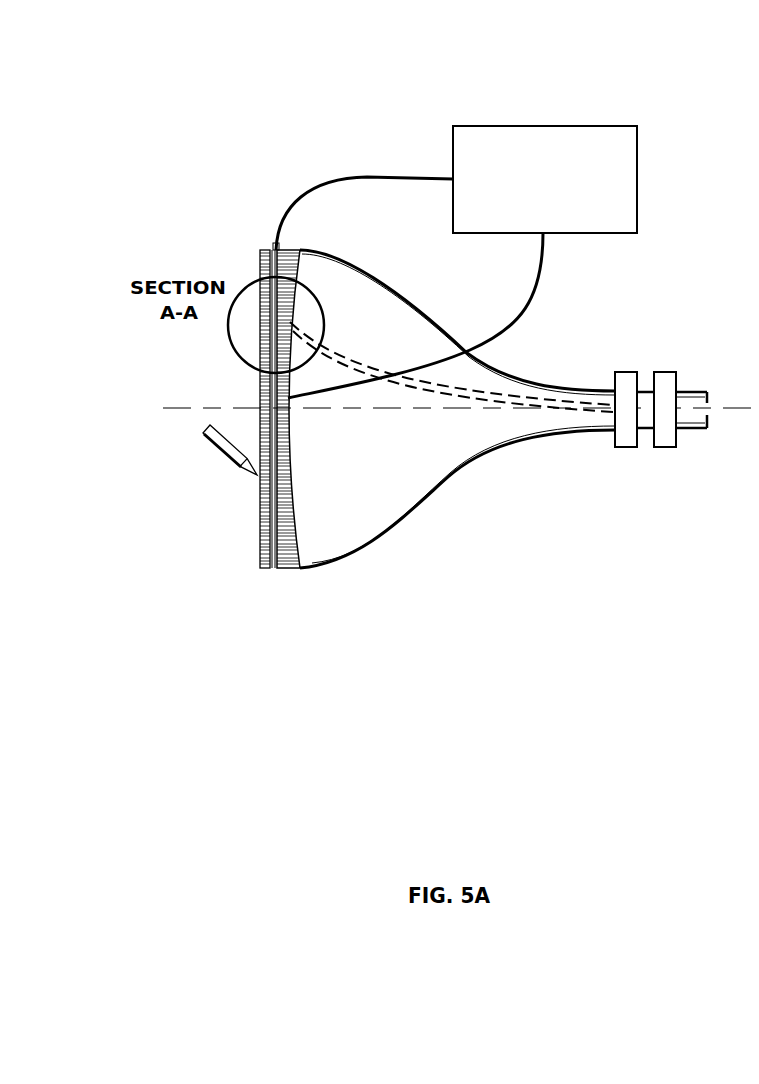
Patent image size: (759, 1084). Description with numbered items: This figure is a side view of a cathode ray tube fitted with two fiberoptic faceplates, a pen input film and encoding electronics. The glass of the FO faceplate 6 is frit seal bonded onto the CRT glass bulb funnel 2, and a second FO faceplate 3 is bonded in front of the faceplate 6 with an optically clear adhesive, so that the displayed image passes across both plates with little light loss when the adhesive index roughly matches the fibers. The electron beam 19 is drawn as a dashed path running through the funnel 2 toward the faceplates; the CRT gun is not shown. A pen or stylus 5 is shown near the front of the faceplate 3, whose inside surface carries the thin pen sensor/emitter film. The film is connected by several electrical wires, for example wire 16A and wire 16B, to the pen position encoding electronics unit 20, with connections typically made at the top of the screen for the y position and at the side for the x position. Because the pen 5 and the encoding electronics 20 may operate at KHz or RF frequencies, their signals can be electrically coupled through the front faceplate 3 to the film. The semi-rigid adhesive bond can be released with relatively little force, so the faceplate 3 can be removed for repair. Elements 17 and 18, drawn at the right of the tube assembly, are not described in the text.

The CRT glass bulb funnel 2 is at (380, 288).
The second FO faceplate 3 is at (262, 265).
The pen or stylus 5 is at (212, 450).
The FO faceplate 6 is at (289, 248).
The electrical wire 16A is at (367, 175).
The electrical wire 16B is at (313, 398).
The connector nuts 17 is at (665, 447).
The fiber connector 18 is at (595, 400).
The electron beam 19 is at (433, 394).
The pen position encoding electronics unit 20 is at (638, 184).